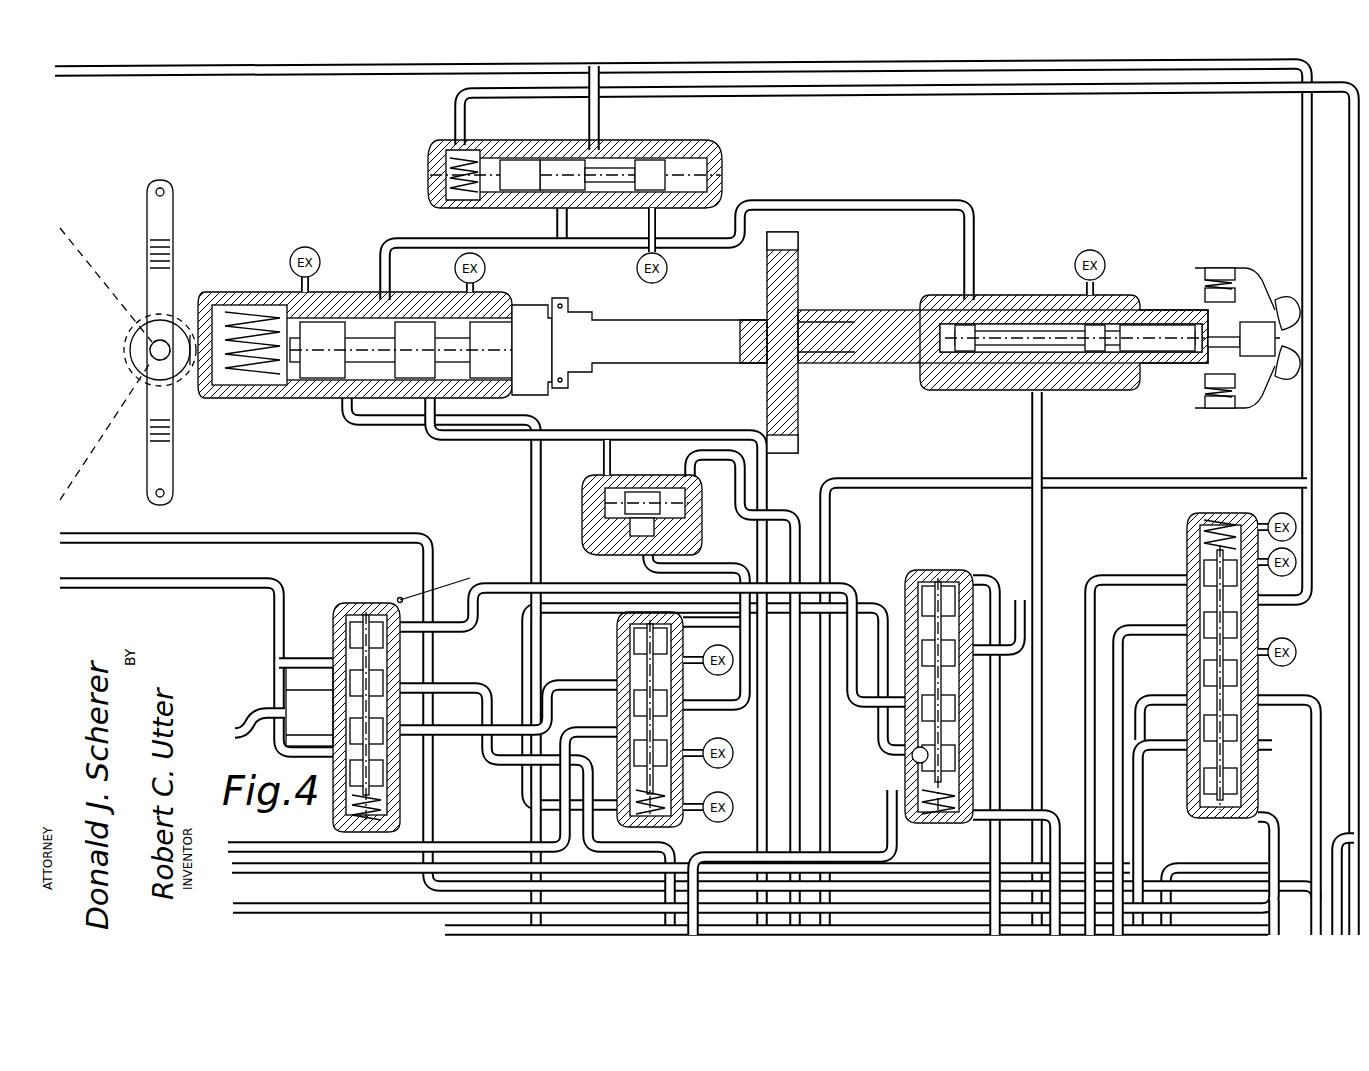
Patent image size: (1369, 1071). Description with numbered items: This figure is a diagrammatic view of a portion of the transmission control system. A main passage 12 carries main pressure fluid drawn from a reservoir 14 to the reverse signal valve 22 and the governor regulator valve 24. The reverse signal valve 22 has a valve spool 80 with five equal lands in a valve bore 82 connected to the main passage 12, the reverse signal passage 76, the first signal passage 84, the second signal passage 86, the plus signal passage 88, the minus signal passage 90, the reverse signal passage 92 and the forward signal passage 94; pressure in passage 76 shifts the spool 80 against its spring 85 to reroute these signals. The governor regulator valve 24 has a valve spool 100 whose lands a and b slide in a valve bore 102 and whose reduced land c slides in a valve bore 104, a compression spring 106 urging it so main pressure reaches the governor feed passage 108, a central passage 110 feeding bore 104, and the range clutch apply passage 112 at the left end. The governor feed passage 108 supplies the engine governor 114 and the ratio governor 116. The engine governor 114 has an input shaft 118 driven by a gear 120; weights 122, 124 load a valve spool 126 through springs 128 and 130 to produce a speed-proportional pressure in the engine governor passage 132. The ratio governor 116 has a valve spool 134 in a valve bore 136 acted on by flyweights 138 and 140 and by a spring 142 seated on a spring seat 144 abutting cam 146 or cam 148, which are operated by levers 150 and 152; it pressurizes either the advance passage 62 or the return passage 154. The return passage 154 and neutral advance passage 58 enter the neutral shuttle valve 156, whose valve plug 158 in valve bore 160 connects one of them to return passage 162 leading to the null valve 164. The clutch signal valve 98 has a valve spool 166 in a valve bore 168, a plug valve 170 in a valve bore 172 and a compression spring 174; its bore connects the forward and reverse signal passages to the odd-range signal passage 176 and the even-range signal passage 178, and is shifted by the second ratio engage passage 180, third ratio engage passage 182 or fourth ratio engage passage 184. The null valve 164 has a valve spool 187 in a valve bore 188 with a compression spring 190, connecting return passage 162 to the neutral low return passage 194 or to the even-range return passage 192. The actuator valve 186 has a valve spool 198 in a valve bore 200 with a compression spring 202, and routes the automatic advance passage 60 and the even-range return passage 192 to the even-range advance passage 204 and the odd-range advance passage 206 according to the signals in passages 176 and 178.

The main passage 12 is at (357, 68).
The reservoir 14 is at (909, 689).
The reverse signal valve 22 is at (1176, 653).
The governor regulator valve 24 is at (614, 171).
The neutral advance passage 58 is at (760, 480).
The automatic advance passage 60 is at (480, 690).
The advance passage 62 is at (378, 428).
The reverse signal passage 76 is at (270, 910).
The valve spool 80 is at (1240, 632).
The valve bore 82 is at (1265, 705).
The 1-2-1, 3-4-3 signal passage 84 is at (445, 930).
The spring 85 is at (1230, 520).
The 2-3-2 signal passage 86 is at (1318, 718).
The plus signal passage 88 is at (288, 535).
The minus signal passage 90 is at (360, 870).
The reverse signal passage 92 is at (1125, 630).
The forward signal passage 94 is at (1128, 582).
The clutch signal valve 98 is at (918, 575).
The valve spool 100 is at (568, 155).
The valve bore 102 is at (600, 160).
The valve bore 104 is at (650, 158).
The compression spring 106 is at (440, 205).
The governor feed passage 108 is at (540, 250).
The central passage 110 is at (587, 200).
The 2-4 range clutch apply passage 112 is at (455, 118).
The engine governor 114 is at (1110, 338).
The ratio governor 116 is at (369, 350).
The input shaft 118 is at (858, 325).
The gear 120 is at (800, 262).
The weight 122 is at (1205, 308).
The weight 124 is at (1240, 395).
The valve spool 126 is at (1118, 328).
The spring 128 is at (1250, 272).
The spring 130 is at (1225, 410).
The engine governor passage 132 is at (1040, 445).
The valve spool 134 is at (490, 330).
The valve bore 136 is at (395, 322).
The flyweight 138 is at (560, 380).
The flyweight 140 is at (560, 305).
The spring 142 is at (255, 300).
The spring seat 144 is at (210, 300).
The cam 146 is at (180, 380).
The cam 148 is at (140, 348).
The lever 150 is at (172, 472).
The lever 152 is at (165, 222).
The return passage 154 is at (440, 400).
The neutral shuttle valve 156 is at (623, 514).
The valve plug 158 is at (652, 492).
The valve bore 160 is at (600, 520).
The return passage 162 is at (700, 565).
The null valve 164 is at (642, 724).
The valve spool 166 is at (895, 718).
The valve bore 168 is at (912, 760).
The plug valve 170 is at (938, 590).
The valve bore 172 is at (900, 600).
The compression spring 174 is at (925, 795).
The 1-3 signal passage 176 is at (465, 815).
The 2-4 signal passage 178 is at (855, 575).
The second ratio engage passage 180 is at (995, 630).
The third ratio engage passage 182 is at (990, 822).
The fourth ratio engage passage 184 is at (990, 585).
The actuator valve 186 is at (409, 691).
The valve spool 187 is at (665, 718).
The valve bore 188 is at (635, 790).
The compression spring 190 is at (633, 818).
The 2-4 return passage 192 is at (440, 730).
The neutral low return passage 194 is at (580, 730).
The valve spool 198 is at (345, 728).
The valve bore 200 is at (340, 700).
The compression spring 202 is at (345, 822).
The 2,4 advance passage 204 is at (255, 712).
The 1,3 advance passage 206 is at (140, 585).